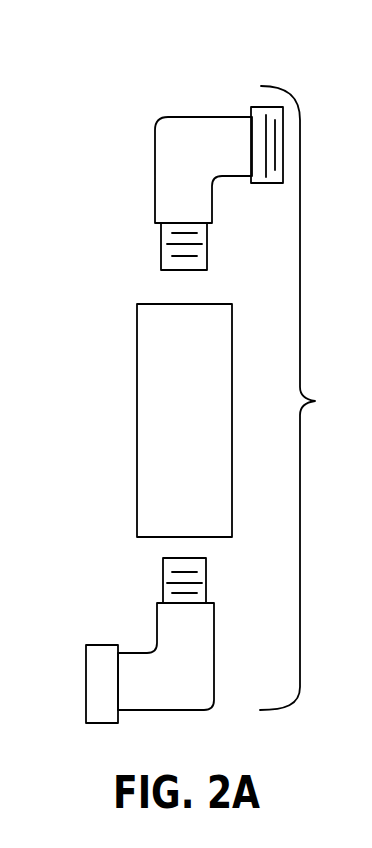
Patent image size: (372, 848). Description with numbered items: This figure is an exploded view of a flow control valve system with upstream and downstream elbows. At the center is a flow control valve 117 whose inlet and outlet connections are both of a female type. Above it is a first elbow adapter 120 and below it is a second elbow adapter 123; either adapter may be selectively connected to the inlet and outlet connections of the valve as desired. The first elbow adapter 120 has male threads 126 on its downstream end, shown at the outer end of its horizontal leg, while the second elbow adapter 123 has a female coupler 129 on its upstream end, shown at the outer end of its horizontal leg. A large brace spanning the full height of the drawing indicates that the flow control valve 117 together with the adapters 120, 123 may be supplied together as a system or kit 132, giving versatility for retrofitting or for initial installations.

The flow control valve 117 is at (100, 428).
The first elbow adapter 120 is at (173, 168).
The second elbow adapter 123 is at (200, 663).
The male threads 126 is at (257, 113).
The female coupler 129 is at (97, 682).
The system or kit 132 is at (303, 398).